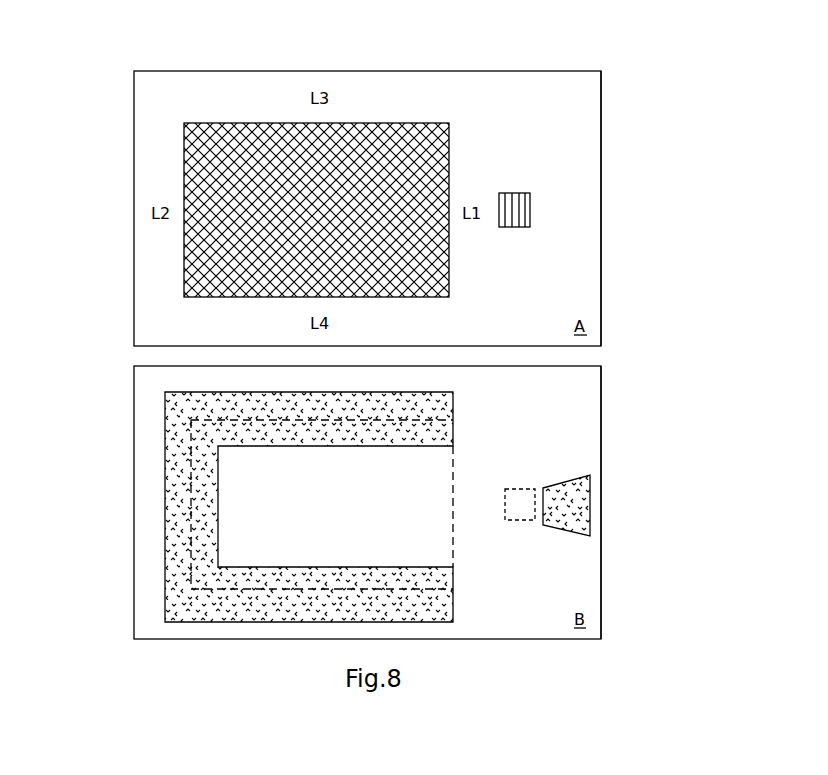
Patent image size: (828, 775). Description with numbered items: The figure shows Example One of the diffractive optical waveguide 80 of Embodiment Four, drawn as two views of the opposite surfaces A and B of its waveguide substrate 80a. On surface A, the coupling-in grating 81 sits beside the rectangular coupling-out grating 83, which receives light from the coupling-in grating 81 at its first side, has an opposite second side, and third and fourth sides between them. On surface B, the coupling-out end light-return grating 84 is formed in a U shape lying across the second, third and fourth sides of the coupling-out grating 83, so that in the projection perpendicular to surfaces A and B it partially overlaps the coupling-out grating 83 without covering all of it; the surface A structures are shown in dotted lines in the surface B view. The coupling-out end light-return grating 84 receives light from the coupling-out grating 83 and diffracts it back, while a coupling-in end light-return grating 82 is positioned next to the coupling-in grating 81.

The diffractive optical waveguide 80 is at (326, 60).
The waveguide substrate 80a is at (601, 210).
The coupling-in grating 81 is at (515, 193).
The coupling-in end light-return grating 82 is at (590, 508).
The coupling-out grating 83 is at (449, 250).
The coupling-out end light-return grating 84 is at (165, 495).